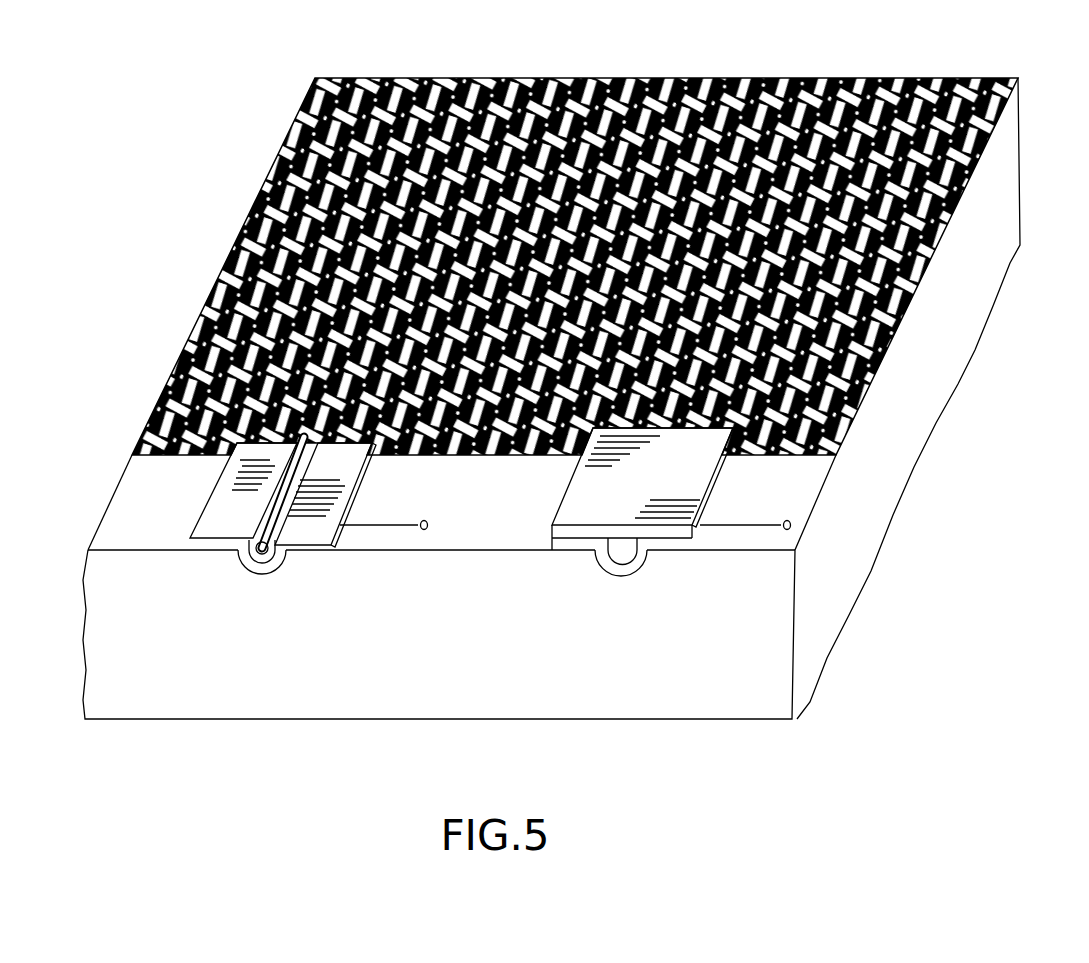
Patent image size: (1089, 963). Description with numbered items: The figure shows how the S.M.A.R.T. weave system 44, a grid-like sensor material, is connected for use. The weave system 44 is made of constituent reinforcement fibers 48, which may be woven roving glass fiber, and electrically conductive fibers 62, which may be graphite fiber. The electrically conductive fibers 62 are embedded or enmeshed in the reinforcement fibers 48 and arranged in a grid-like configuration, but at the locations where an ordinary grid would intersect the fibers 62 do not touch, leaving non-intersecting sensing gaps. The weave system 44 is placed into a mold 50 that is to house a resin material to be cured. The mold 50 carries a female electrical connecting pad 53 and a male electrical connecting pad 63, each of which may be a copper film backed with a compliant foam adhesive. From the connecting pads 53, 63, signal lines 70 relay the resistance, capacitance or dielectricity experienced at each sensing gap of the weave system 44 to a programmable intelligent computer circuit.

The S.M.A.R.T. weave system 44 is at (946, 66).
The constituent reinforcement fibers 48 is at (527, 100).
The mold 50 is at (350, 687).
The female electrical connecting pad 53 is at (220, 553).
The electrically conductive fibers 62 is at (455, 78).
The male electrical connecting pad 63 is at (578, 515).
The signal lines 70 is at (397, 530).